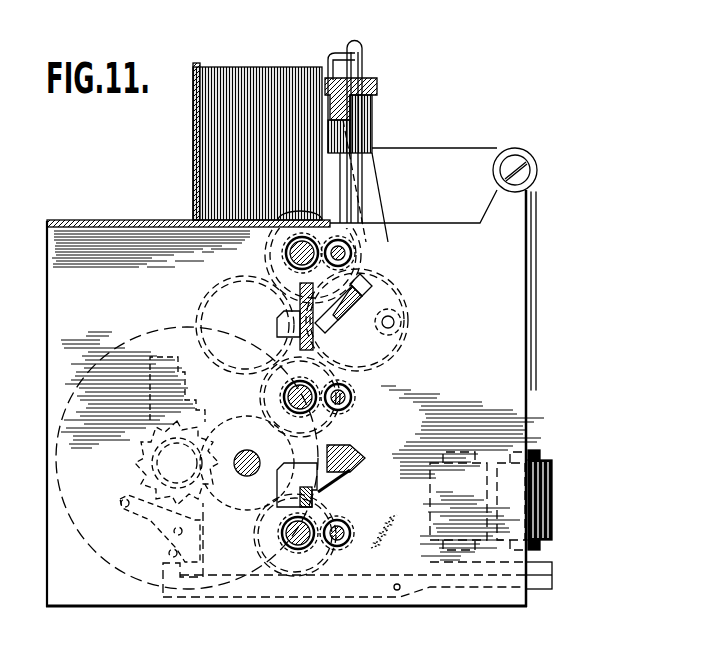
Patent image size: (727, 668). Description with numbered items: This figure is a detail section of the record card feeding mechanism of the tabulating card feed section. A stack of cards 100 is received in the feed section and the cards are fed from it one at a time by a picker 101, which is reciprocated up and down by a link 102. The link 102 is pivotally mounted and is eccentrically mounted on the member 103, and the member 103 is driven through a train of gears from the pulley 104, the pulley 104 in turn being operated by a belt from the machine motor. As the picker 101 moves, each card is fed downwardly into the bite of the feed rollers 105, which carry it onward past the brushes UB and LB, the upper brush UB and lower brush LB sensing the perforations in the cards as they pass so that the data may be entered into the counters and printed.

The stack of cards 100 is at (253, 83).
The picker 101 is at (377, 86).
The link 102 is at (373, 202).
The member 103 is at (413, 300).
The pulley 104 is at (69, 388).
The feed rollers 105 is at (300, 258).
The upper brush UB is at (338, 332).
The lower brush LB is at (340, 478).